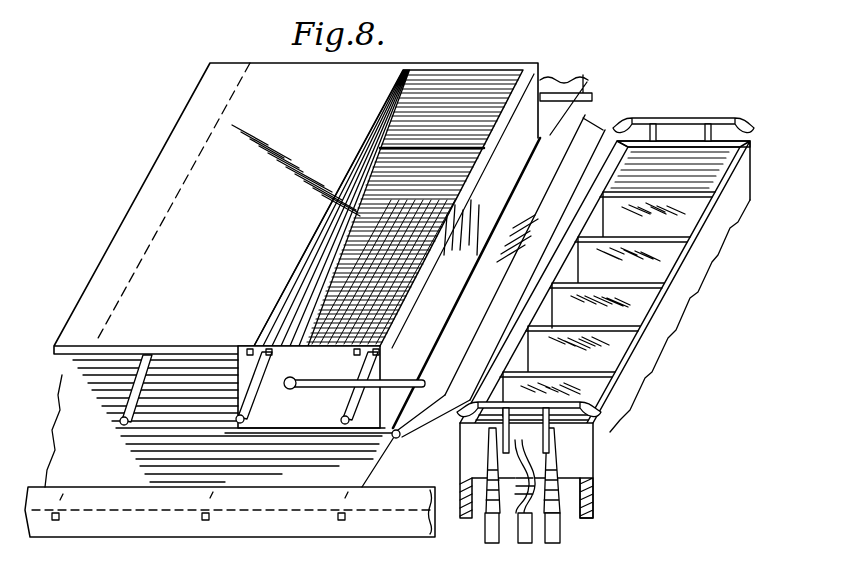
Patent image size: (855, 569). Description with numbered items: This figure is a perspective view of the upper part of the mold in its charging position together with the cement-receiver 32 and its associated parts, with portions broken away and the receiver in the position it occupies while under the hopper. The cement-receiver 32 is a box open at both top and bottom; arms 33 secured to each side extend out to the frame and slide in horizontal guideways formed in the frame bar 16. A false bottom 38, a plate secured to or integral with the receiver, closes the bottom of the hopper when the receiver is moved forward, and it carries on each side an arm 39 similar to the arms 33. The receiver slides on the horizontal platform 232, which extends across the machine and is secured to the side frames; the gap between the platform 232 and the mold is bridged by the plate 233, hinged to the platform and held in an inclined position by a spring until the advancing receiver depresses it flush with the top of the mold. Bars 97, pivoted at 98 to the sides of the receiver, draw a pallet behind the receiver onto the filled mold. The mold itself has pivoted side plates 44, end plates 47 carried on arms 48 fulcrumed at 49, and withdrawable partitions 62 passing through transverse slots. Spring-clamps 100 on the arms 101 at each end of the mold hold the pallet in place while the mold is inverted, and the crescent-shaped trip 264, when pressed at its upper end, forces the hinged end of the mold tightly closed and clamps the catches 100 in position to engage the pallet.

The bar 16 is at (230, 512).
The cement-receiver 32 is at (408, 251).
The arms 33 is at (350, 404).
The false bottom 38 is at (296, 208).
The arm 39 is at (148, 372).
The mold side plate 44 is at (710, 243).
The end plates 47 is at (717, 166).
The arms 48 is at (566, 537).
The fulcrum 49 is at (594, 505).
The partitions 62 is at (595, 306).
The bars 97 is at (317, 381).
The pivot 98 is at (291, 377).
The spring-clamps 100 is at (579, 395).
The arms 101 is at (595, 421).
The platform 232 is at (215, 423).
The plate 233 is at (483, 301).
The trip 264 is at (524, 537).